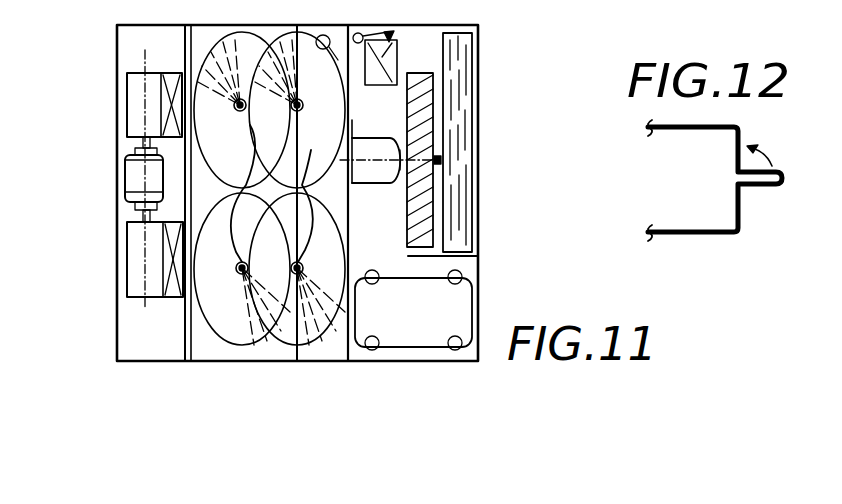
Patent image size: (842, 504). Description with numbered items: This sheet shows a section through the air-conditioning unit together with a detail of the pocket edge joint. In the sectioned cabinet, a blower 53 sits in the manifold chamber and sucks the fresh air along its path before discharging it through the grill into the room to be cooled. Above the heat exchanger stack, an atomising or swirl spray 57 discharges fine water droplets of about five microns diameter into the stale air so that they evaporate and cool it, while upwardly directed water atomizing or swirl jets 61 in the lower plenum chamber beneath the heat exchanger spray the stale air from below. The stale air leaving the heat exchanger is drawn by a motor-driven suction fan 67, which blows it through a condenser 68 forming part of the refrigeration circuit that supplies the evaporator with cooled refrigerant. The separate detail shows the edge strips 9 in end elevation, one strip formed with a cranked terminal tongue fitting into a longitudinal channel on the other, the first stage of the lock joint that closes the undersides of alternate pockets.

In FIG. 11, the blower 53 is at (135, 116).
In FIG. 11, the atomising or swirl spray 57 is at (240, 111).
In FIG. 11, the upwardly directed water atomizing or swirl jets 61 is at (305, 108).
In FIG. 11, the motor-driven suction fan 67 is at (420, 135).
In FIG. 11, the condenser 68 is at (462, 66).
In FIG. 12, the edge strips 9 is at (763, 187).